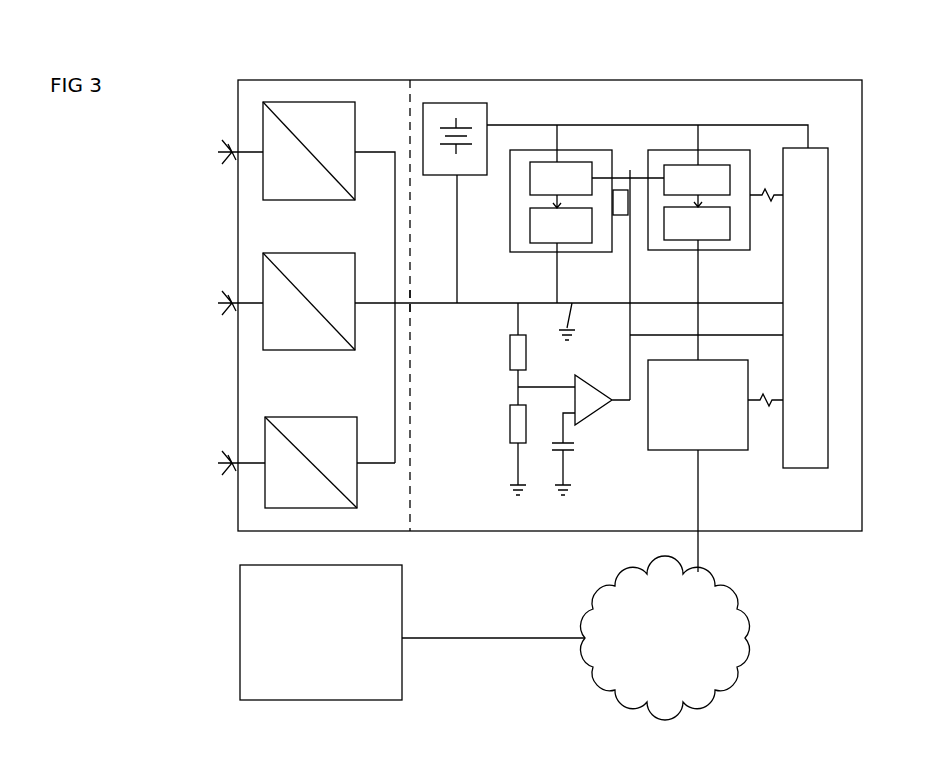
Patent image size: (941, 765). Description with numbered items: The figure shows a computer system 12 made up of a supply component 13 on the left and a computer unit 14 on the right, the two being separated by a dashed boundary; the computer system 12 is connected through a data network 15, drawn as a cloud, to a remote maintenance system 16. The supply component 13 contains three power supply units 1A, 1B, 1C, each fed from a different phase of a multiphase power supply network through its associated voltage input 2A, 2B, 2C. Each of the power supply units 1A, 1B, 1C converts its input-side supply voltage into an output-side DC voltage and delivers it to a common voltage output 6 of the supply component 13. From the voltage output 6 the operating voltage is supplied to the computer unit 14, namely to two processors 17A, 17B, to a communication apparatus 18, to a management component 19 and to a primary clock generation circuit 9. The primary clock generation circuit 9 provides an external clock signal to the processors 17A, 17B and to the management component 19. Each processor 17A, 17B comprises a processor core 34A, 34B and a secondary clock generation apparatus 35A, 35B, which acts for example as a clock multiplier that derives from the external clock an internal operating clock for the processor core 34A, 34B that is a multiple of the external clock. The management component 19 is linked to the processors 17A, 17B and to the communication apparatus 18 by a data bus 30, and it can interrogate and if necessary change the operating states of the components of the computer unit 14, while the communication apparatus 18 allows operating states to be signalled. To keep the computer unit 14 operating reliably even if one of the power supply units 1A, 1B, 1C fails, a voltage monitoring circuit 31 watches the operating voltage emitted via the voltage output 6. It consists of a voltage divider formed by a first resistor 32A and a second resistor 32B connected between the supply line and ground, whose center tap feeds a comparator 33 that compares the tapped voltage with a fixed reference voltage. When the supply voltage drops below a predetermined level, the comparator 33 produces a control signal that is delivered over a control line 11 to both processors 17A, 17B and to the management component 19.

The power supply unit 1A is at (356, 112).
The power supply unit 1B is at (336, 254).
The power supply unit 1C is at (330, 418).
The voltage input 2A is at (222, 162).
The voltage input 2B is at (223, 314).
The voltage input 2C is at (225, 474).
The common voltage output 6 is at (414, 308).
The primary clock generation circuit 9 is at (488, 108).
The control line 11 is at (657, 334).
The computer system 12 is at (884, 62).
The supply component 13 is at (334, 60).
The computer unit 14 is at (588, 61).
The data network 15 is at (750, 658).
The remote maintenance system 16 is at (290, 700).
The processor 17A is at (508, 252).
The processor 17B is at (664, 252).
The communication apparatus 18 is at (668, 452).
The management component 19 is at (806, 470).
The data bus 30 is at (766, 188).
The voltage monitoring circuit 31 is at (468, 476).
The first resistor 32A is at (509, 357).
The second resistor 32B is at (509, 423).
The comparator 33 is at (585, 380).
The processor core 34A is at (561, 219).
The processor core 34B is at (697, 217).
The secondary clock generation apparatus 35A is at (561, 178).
The secondary clock generation apparatus 35B is at (697, 180).